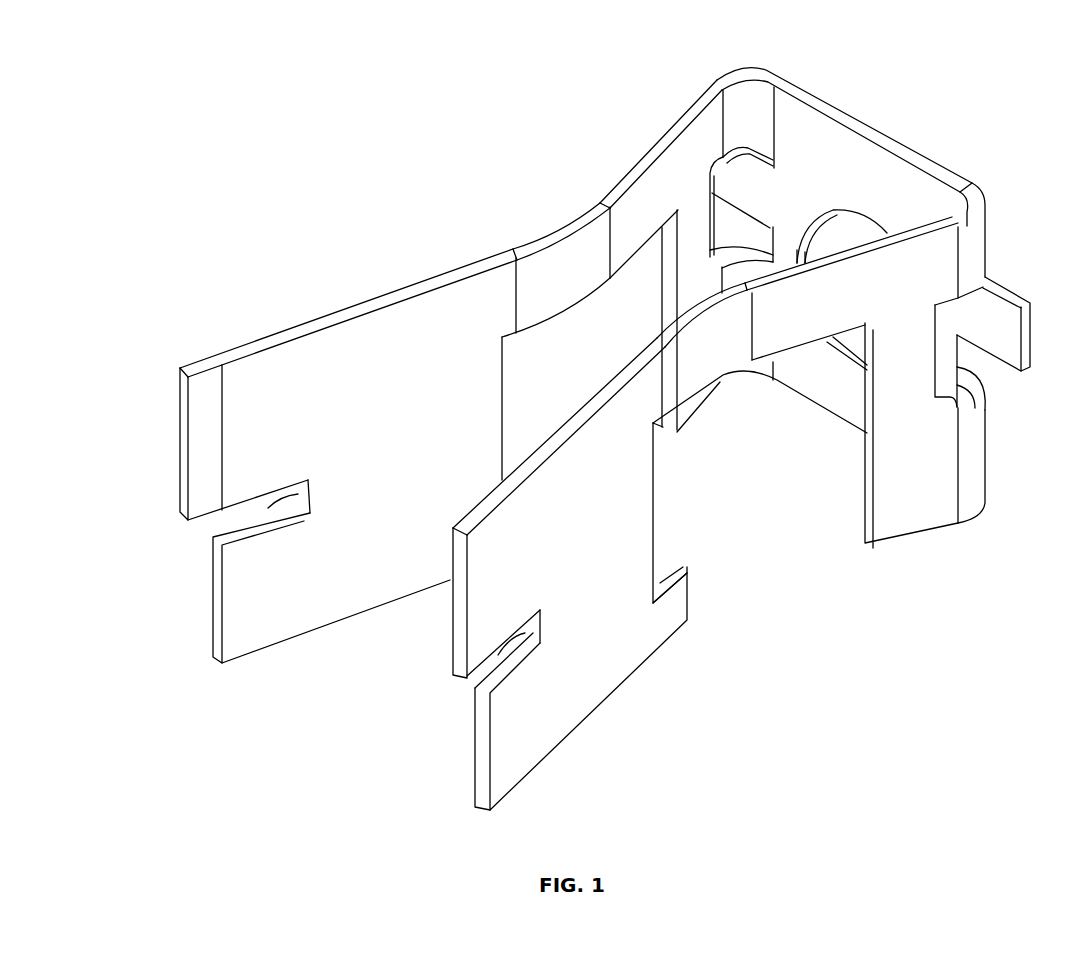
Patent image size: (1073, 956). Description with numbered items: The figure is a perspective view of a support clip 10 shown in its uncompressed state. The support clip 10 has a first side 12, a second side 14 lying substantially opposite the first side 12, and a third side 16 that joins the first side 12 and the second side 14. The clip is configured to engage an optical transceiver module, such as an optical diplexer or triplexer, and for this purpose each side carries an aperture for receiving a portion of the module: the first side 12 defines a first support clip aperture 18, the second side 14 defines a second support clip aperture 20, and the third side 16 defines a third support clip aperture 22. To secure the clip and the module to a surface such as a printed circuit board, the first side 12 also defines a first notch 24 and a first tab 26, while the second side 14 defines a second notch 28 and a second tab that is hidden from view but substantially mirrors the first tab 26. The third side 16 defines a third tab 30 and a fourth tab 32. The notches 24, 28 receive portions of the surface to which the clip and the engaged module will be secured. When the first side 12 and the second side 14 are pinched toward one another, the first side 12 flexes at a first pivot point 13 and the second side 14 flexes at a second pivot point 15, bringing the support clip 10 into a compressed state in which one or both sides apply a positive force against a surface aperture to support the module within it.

The support clip 10 is at (977, 96).
The first side 12 is at (585, 561).
The first pivot point 13 is at (717, 358).
The second side 14 is at (384, 435).
The second pivot point 15 is at (574, 278).
The third side 16 is at (848, 178).
The first support clip aperture 18 is at (730, 472).
The second support clip aperture 20 is at (529, 378).
The third support clip aperture 22 is at (846, 228).
The first notch 24 is at (540, 634).
The first tab 26 is at (692, 578).
The second notch 28 is at (313, 489).
The third tab 30 is at (1003, 332).
The fourth tab 32 is at (750, 186).